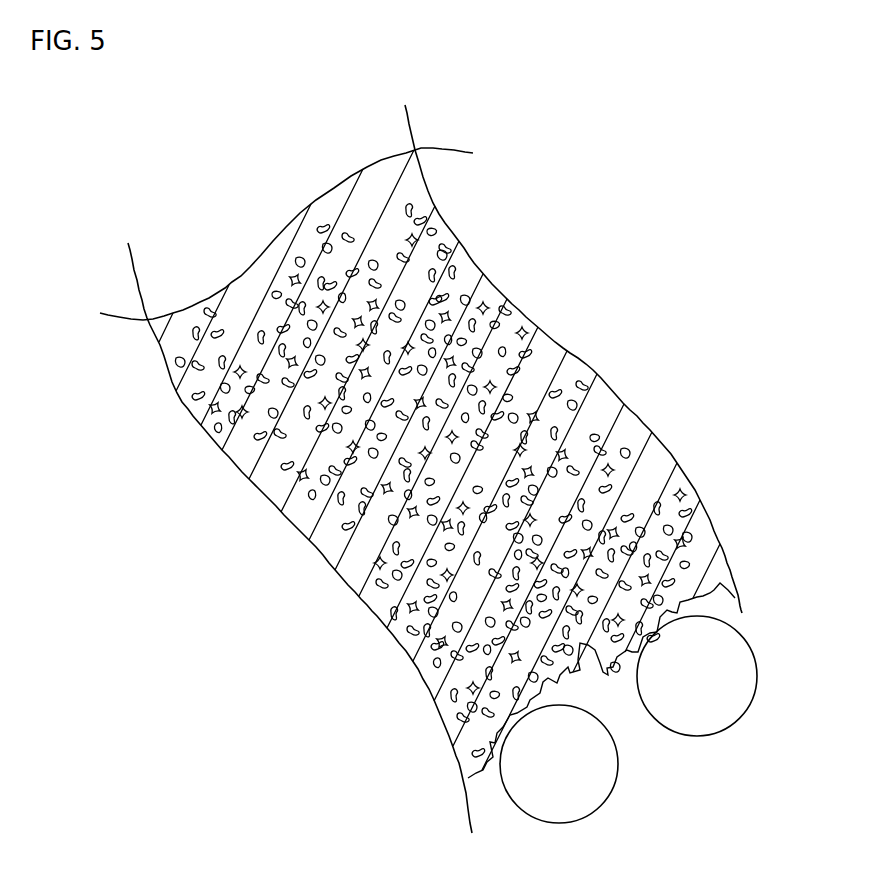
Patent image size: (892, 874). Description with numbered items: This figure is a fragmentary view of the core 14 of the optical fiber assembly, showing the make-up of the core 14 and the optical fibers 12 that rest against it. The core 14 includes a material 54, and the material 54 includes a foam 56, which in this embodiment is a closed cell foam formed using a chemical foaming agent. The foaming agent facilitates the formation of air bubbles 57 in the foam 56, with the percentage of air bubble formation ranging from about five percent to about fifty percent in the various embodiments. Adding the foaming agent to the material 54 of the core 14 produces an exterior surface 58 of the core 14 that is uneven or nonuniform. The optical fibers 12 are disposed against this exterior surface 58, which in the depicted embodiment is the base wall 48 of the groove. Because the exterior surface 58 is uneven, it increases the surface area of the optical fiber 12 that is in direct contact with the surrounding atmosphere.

The optical fiber 12 is at (724, 730).
The core 14 is at (592, 335).
The base wall 48 is at (615, 677).
The material 54 is at (293, 526).
The foam 56 is at (633, 430).
The air bubbles 57 is at (380, 563).
The exterior surface 58 is at (712, 603).